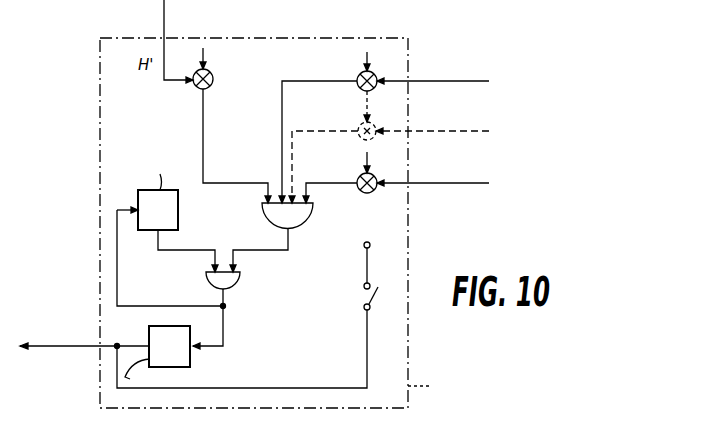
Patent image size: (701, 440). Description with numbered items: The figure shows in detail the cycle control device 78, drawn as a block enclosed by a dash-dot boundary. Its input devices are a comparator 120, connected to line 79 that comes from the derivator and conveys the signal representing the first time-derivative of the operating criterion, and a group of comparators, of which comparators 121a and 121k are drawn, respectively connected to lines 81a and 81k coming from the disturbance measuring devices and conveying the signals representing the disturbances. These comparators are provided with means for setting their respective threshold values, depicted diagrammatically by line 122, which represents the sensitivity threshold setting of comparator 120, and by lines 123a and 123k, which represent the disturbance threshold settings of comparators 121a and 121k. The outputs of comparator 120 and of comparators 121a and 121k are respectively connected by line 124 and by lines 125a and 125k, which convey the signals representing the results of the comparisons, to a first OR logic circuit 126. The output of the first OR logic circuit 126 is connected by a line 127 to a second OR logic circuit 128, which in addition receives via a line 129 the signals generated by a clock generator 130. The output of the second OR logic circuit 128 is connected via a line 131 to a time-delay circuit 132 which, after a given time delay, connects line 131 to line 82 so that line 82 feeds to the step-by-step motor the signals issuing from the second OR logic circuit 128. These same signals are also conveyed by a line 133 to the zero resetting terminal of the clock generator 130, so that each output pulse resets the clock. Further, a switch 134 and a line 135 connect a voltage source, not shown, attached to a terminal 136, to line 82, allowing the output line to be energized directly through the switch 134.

The cycle control device 78 is at (410, 356).
The line 79 is at (166, 15).
The line 81k is at (445, 80).
The line 81a is at (447, 186).
The line 82 is at (66, 349).
The comparator 120 is at (211, 86).
The comparator 121k is at (359, 88).
The comparator 121a is at (373, 192).
The line 122 is at (205, 50).
The line 123k is at (367, 53).
The line 123a is at (367, 153).
The line 124 is at (225, 186).
The line 125k is at (290, 131).
The line 125a is at (333, 186).
The first OR logic circuit 126 is at (260, 222).
The line 127 is at (277, 253).
The second OR logic circuit 128 is at (236, 286).
The line 129 is at (180, 256).
The clock generator 130 is at (155, 195).
The line 131 is at (226, 340).
The time-delay circuit 132 is at (210, 356).
The line 133 is at (118, 252).
The switch 134 is at (363, 297).
The line 135 is at (241, 349).
The terminal 136 is at (363, 247).